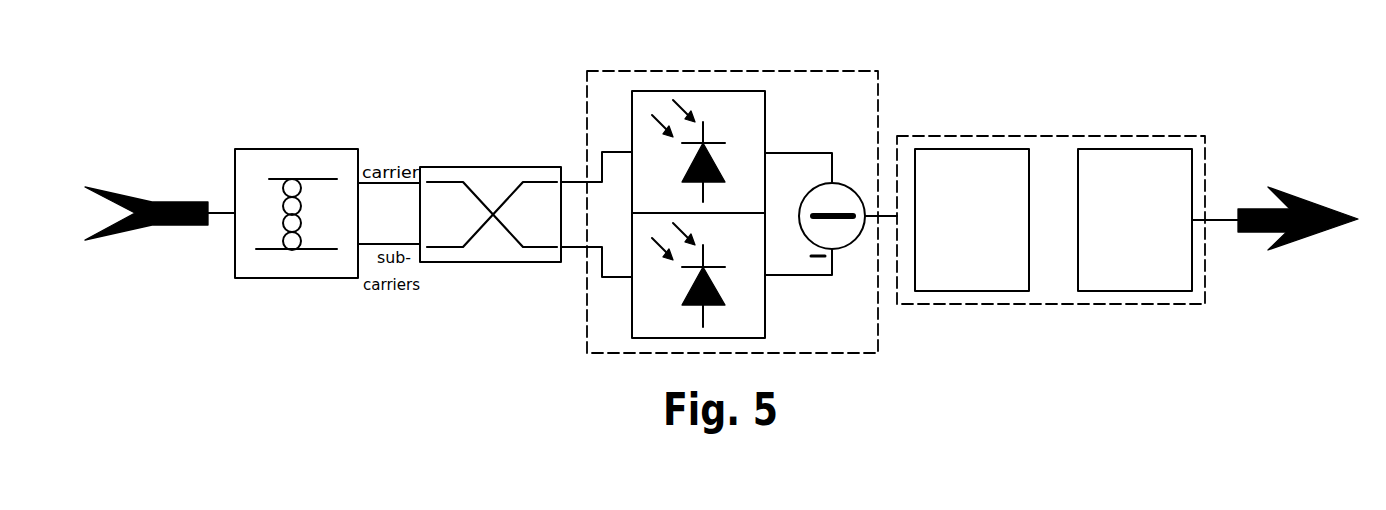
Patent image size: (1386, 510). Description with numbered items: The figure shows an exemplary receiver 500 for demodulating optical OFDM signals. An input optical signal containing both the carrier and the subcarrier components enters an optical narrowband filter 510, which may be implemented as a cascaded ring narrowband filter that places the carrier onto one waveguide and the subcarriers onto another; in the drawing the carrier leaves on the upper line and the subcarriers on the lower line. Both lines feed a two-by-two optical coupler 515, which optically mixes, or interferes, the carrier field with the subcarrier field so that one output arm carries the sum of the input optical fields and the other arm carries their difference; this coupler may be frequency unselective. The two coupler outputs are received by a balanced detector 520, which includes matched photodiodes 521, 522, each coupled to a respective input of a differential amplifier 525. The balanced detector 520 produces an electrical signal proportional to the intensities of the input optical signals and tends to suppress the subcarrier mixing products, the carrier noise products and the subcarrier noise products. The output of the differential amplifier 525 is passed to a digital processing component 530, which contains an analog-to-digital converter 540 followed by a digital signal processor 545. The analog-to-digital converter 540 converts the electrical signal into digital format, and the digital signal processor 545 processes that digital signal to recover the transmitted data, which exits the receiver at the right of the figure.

The receiver 500 is at (240, 69).
The optical narrowband filter 510 is at (380, 135).
The 2×2 optical coupler 515 is at (546, 149).
The balanced detector 520 is at (872, 71).
The photodiode 521 is at (759, 132).
The photodiode 522 is at (759, 323).
The differential amplifier 525 is at (834, 183).
The digital processing component 530 is at (1188, 136).
The analog-to-digital converter 540 is at (998, 291).
The digital signal processor 545 is at (1158, 291).